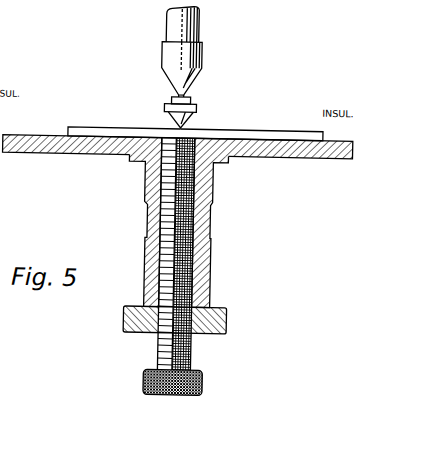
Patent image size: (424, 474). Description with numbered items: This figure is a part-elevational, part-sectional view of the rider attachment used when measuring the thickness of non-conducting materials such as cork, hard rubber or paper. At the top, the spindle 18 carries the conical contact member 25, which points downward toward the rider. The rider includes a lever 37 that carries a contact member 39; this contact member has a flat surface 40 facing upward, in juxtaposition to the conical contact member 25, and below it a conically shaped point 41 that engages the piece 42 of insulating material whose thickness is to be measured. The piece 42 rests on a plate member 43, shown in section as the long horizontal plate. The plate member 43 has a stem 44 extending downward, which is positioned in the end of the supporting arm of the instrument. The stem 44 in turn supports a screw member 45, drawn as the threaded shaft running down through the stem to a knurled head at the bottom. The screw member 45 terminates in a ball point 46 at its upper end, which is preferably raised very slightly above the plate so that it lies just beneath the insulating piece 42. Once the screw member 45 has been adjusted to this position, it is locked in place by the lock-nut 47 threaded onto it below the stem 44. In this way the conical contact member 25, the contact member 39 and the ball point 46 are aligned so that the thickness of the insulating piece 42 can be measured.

The spindle 18 is at (170, 27).
The conical contact member 25 is at (170, 77).
The lever 37 is at (195, 108).
The contact member 39 is at (165, 110).
The flat surface 40 is at (189, 100).
The conically shaped point 41 is at (168, 123).
The piece of insulating material 42 is at (285, 129).
The plate member 43 is at (313, 155).
The stem 44 is at (149, 282).
The screw member 45 is at (192, 360).
The ball point 46 is at (189, 140).
The lock-nut 47 is at (232, 312).